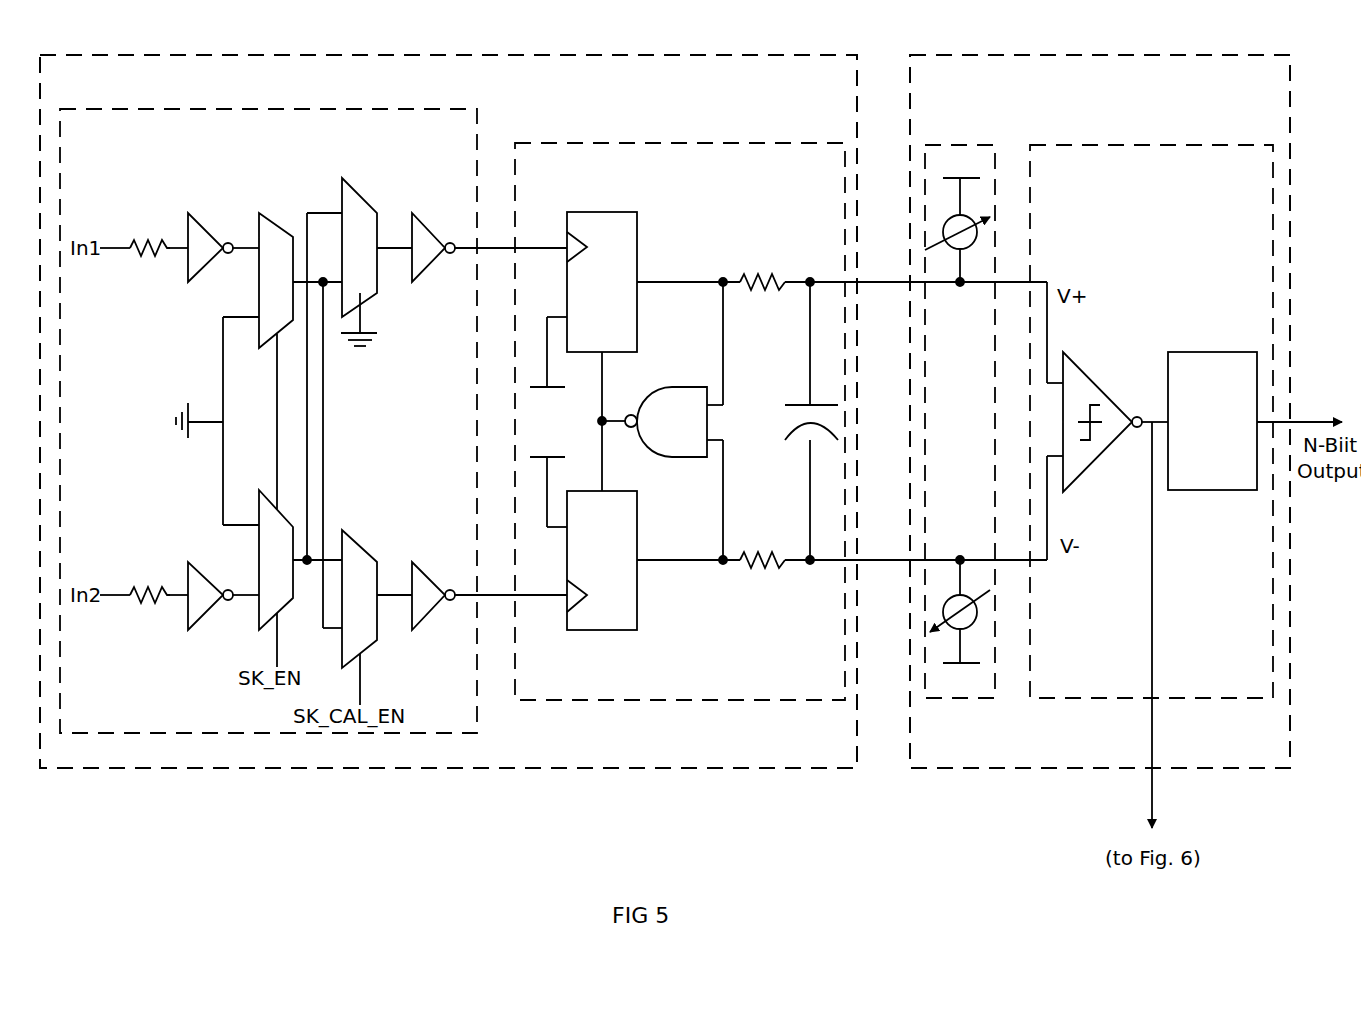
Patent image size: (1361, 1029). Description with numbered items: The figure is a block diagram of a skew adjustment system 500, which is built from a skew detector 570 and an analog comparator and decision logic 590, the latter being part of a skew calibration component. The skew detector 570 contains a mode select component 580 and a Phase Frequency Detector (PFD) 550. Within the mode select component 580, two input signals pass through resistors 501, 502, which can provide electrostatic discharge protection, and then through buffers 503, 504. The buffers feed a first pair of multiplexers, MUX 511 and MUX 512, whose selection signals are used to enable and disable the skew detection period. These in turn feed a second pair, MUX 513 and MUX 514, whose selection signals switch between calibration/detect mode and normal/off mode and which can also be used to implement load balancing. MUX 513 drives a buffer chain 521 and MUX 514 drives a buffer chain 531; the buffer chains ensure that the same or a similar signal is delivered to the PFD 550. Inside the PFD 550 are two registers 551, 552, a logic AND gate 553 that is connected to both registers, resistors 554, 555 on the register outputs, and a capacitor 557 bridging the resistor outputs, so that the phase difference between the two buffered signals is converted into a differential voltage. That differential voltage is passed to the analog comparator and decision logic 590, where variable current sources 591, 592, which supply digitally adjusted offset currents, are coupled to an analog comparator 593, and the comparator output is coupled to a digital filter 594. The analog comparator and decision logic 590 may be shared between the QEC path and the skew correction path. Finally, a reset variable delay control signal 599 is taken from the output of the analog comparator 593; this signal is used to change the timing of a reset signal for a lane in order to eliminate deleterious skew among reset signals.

The skew adjustment system 500 is at (686, 25).
The resistor 501 is at (155, 258).
The resistor 502 is at (157, 605).
The buffer 503 is at (203, 225).
The buffer 504 is at (205, 575).
The MUX 511 is at (277, 222).
The MUX 512 is at (255, 611).
The MUX 513 is at (362, 190).
The MUX 514 is at (345, 545).
The buffer chain 521 is at (440, 238).
The buffer chain 531 is at (440, 608).
The Phase Frequency Detector (PFD) 550 is at (680, 421).
The register 551 is at (602, 282).
The register 552 is at (602, 560).
The logic AND gate 553 is at (666, 422).
The resistor 554 is at (763, 275).
The resistor 555 is at (760, 570).
The capacitor 557 is at (793, 421).
The skew detector 570 is at (448, 411).
The mode select component 580 is at (268, 421).
The analog comparator and decision logic 590 is at (1100, 411).
The variable current source 591 is at (985, 250).
The variable current source 592 is at (942, 588).
The analog comparator 593 is at (1110, 380).
The digital filter 594 is at (1212, 421).
The reset variable delay control signal 599 is at (1160, 622).